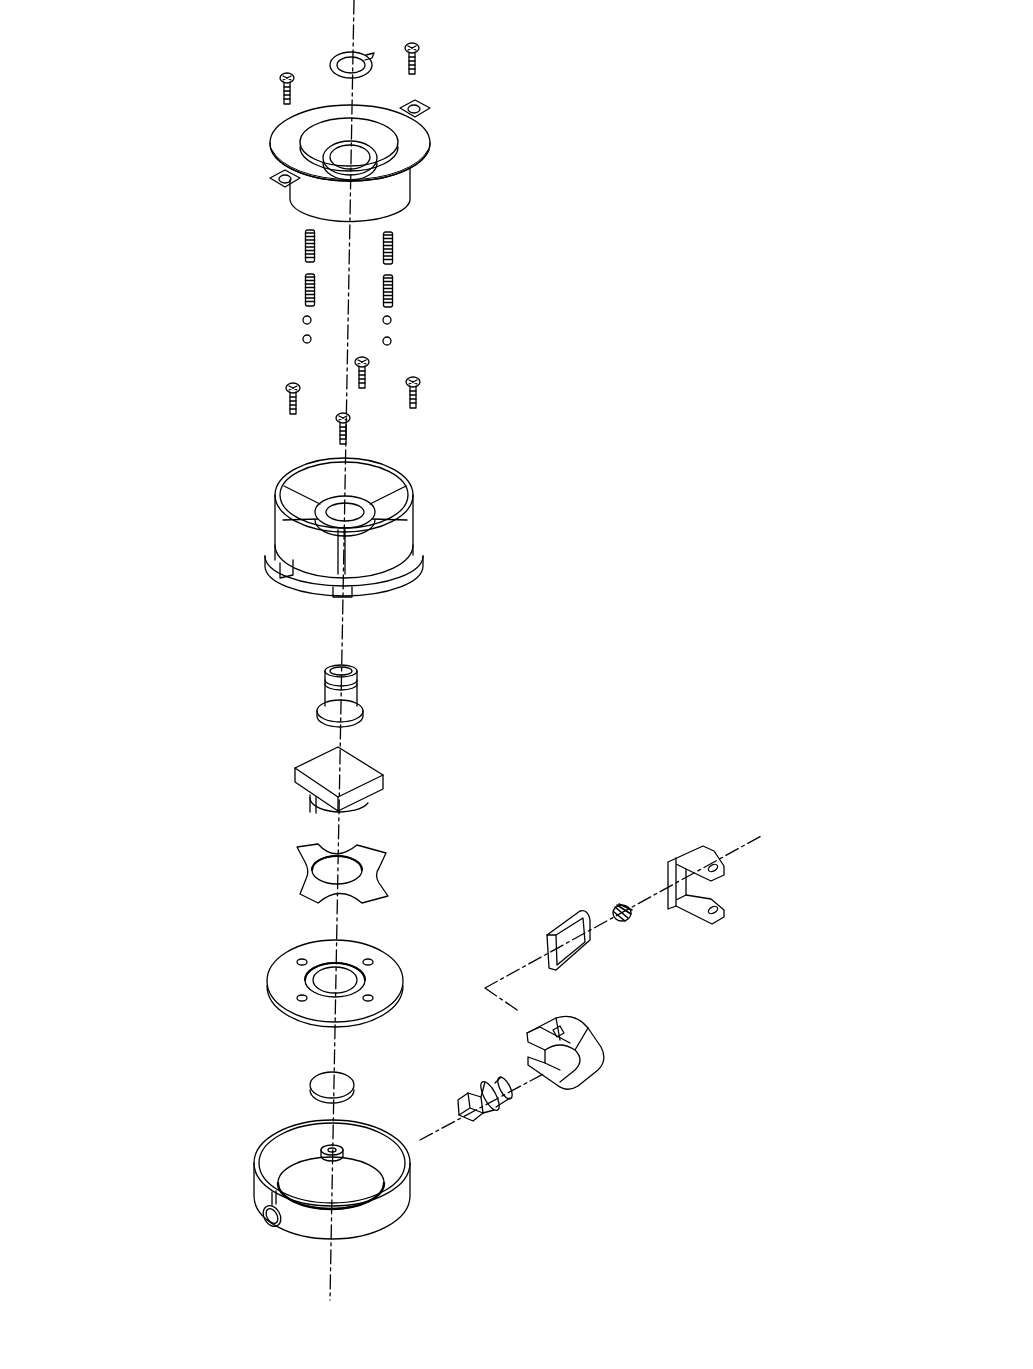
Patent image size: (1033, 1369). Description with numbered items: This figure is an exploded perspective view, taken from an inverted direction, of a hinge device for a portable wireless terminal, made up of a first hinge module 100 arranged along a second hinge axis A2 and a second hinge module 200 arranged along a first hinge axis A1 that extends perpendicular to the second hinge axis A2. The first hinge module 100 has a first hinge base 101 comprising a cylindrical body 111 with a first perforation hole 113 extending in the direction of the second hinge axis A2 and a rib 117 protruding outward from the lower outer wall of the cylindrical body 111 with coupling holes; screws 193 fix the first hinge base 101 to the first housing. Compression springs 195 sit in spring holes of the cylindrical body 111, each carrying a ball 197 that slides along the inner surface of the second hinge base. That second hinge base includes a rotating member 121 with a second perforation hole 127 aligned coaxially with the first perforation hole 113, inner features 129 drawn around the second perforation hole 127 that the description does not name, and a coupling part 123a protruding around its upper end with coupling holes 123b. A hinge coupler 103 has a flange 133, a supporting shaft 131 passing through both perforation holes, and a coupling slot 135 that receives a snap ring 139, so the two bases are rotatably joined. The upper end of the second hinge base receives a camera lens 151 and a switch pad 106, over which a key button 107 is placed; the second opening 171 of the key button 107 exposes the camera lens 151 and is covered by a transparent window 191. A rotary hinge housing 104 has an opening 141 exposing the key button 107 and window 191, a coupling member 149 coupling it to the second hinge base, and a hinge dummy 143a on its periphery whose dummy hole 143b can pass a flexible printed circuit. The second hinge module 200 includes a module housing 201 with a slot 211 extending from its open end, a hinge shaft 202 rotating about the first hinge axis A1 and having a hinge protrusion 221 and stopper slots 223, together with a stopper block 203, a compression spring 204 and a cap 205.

The first hinge module 100 is at (612, 412).
The first hinge base 101 is at (450, 106).
The hinge coupler 103 is at (378, 661).
The rotary hinge housing 104 is at (392, 1245).
The switch pad 106 is at (303, 852).
The key button 107 is at (298, 957).
The cylindrical body 111 is at (290, 200).
The first perforation hole 113 is at (390, 162).
The rib 117 is at (417, 143).
The rotating member 121 is at (341, 546).
The coupling part 123a is at (420, 567).
The coupling hole 123b is at (337, 597).
The second perforation hole 127 is at (357, 503).
The rib 129 is at (280, 493).
The supporting shaft 131 is at (352, 690).
The flange 133 is at (317, 708).
The coupling slot 135 is at (325, 677).
The snap ring 139 is at (333, 59).
The opening 141 is at (303, 1178).
The hinge dummy 143a is at (275, 1227).
The dummy hole 143b is at (263, 1217).
The coupling member 149 is at (338, 1145).
The camera lens 151 is at (362, 767).
The second opening 171 is at (313, 977).
The transparent window 191 is at (323, 1083).
The screw 193 is at (278, 93).
The compression spring 195 is at (393, 292).
The ball 197 is at (392, 341).
The second hinge module 200 is at (660, 984).
The module housing 201 is at (627, 1104).
The hinge shaft 202 is at (479, 1072).
The stopper block 203 is at (555, 911).
The compression spring 204 is at (617, 907).
The cap 205 is at (688, 855).
The slot 211 is at (562, 1088).
The hinge protrusion 221 is at (480, 1117).
The stopper slot 223 is at (500, 1110).
The first hinge axis A1 is at (745, 840).
The second hinge axis A2 is at (356, 24).